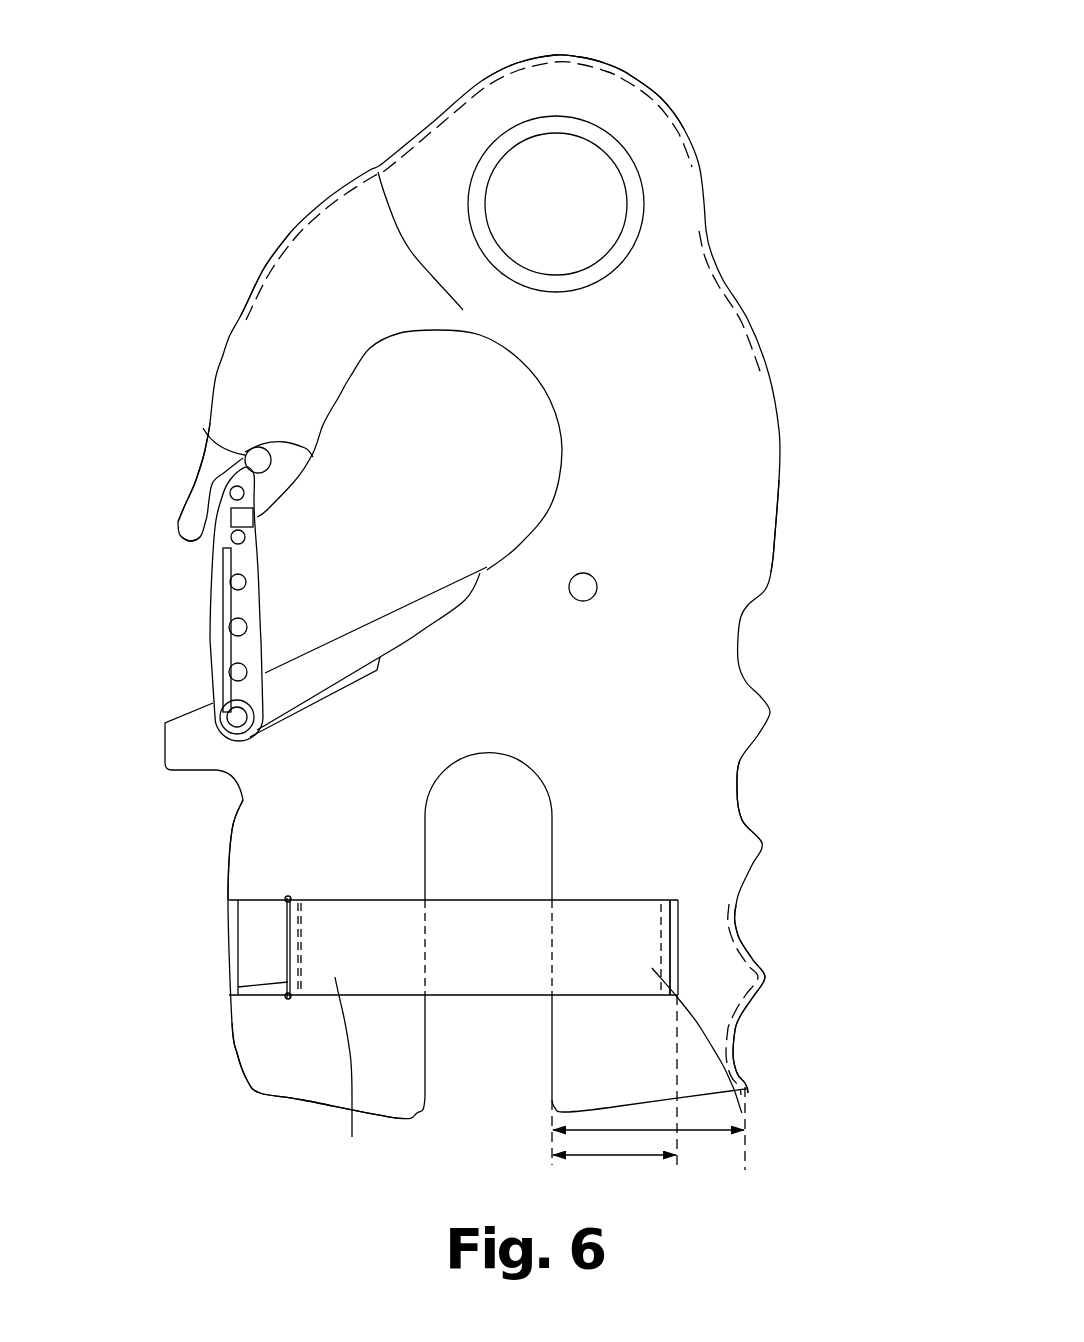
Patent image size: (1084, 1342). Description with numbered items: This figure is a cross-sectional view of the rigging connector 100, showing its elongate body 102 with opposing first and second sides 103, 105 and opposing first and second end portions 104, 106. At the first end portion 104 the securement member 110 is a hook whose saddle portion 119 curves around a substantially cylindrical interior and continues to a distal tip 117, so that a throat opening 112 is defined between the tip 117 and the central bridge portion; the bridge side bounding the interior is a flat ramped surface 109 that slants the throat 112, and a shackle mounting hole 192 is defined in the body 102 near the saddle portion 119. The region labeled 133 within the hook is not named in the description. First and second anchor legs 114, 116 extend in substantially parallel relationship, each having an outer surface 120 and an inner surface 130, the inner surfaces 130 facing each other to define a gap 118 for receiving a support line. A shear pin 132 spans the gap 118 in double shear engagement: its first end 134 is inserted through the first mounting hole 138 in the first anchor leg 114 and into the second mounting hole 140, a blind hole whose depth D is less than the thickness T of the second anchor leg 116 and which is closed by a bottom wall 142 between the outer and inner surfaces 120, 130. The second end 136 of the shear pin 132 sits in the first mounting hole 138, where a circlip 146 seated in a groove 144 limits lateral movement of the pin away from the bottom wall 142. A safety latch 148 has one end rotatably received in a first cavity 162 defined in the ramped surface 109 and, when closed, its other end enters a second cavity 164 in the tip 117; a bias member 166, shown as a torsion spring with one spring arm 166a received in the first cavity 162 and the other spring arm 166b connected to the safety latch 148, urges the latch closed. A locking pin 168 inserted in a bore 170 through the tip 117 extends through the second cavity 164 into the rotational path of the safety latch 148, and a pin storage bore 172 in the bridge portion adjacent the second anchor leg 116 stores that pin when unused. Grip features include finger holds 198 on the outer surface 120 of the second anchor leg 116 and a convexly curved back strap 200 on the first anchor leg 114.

The rigging connector 100 is at (245, 148).
The elongate body 102 is at (747, 325).
The first side 103 is at (185, 837).
The first end portion 104 is at (638, 60).
The second side 105 is at (808, 608).
The second end portion 106 is at (337, 1147).
The ramped surface 109 is at (453, 580).
The securement member 110 is at (263, 260).
The throat opening 112 is at (198, 562).
The first anchor leg 114 is at (303, 1100).
The second anchor leg 116 is at (620, 1112).
The distal tip 117 is at (182, 527).
The gap 118 is at (488, 1080).
The saddle portion 119 is at (378, 172).
The outer surface 120 is at (237, 1053).
The inner surface 130 is at (548, 1073).
The shear pin 132 is at (520, 995).
The mouth opening 133 is at (380, 410).
The first end 134 is at (742, 1110).
The second end 136 is at (352, 1135).
The first mounting hole 138 is at (198, 925).
The second mounting hole 140 is at (680, 912).
The bottom wall 142 is at (678, 940).
The groove 144 is at (287, 900).
The circlip 146 is at (287, 983).
The safety latch 148 is at (212, 627).
The first cavity 162 is at (413, 610).
The second cavity 164 is at (289, 497).
The bias member 166 is at (223, 715).
The spring arm 166a is at (350, 673).
The spring arm 166b is at (225, 660).
The locking pin 168 is at (212, 430).
The bore 170 is at (275, 466).
The pin storage bore 172 is at (600, 592).
The shackle mounting hole 192 is at (600, 178).
The finger holds 198 is at (737, 782).
The back strap 200 is at (242, 805).
The depth D is at (632, 1155).
The thickness T is at (710, 1133).